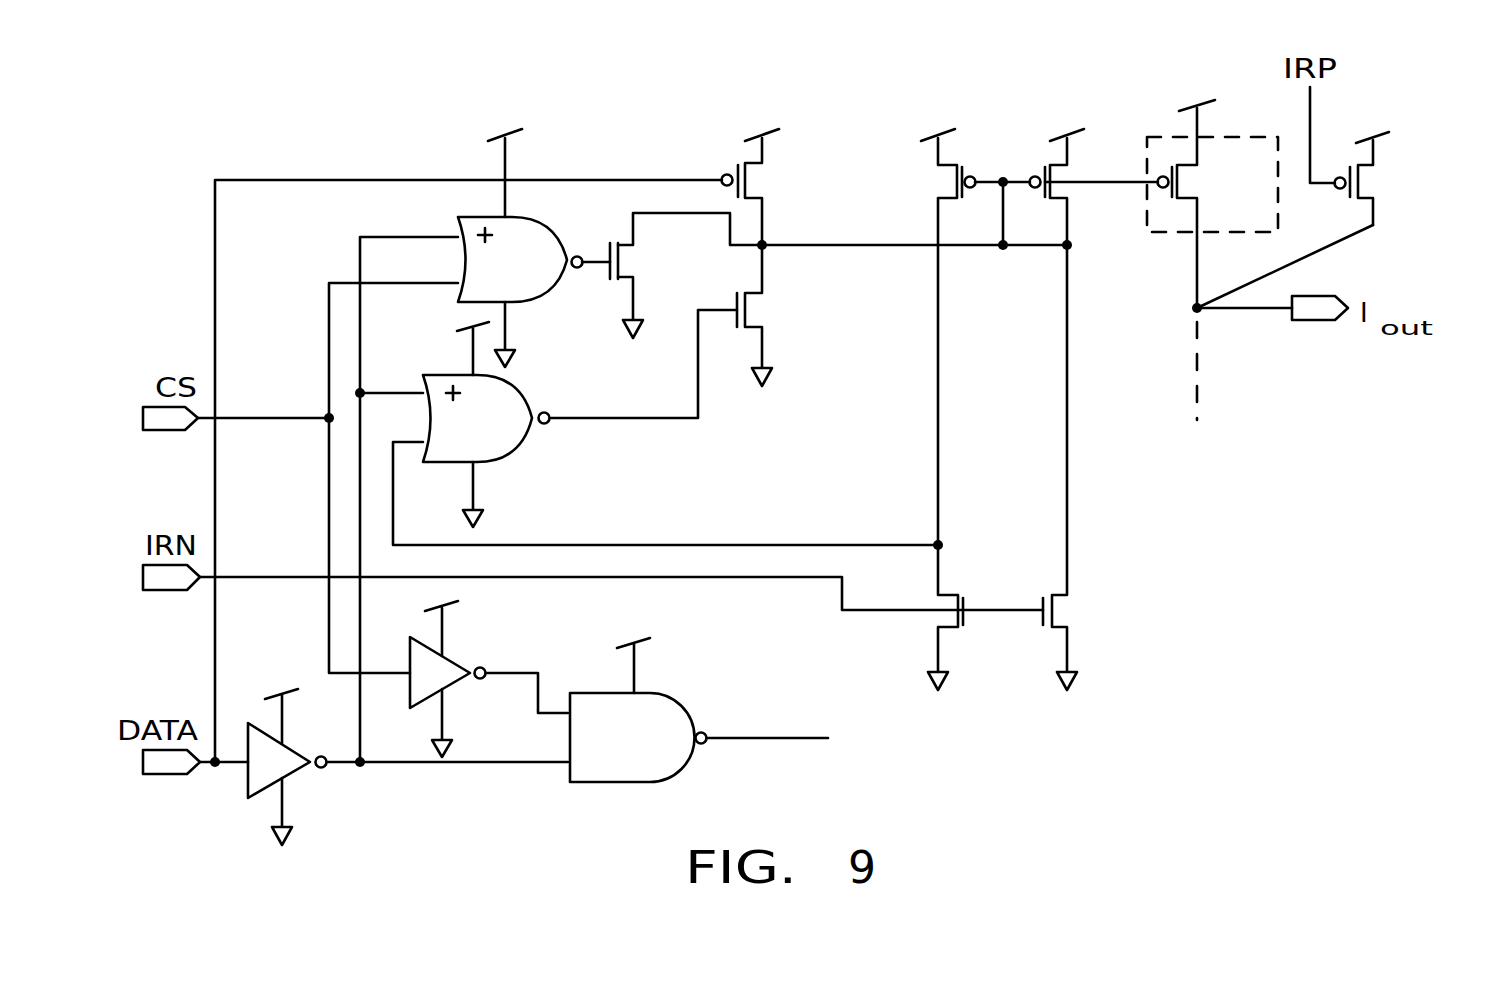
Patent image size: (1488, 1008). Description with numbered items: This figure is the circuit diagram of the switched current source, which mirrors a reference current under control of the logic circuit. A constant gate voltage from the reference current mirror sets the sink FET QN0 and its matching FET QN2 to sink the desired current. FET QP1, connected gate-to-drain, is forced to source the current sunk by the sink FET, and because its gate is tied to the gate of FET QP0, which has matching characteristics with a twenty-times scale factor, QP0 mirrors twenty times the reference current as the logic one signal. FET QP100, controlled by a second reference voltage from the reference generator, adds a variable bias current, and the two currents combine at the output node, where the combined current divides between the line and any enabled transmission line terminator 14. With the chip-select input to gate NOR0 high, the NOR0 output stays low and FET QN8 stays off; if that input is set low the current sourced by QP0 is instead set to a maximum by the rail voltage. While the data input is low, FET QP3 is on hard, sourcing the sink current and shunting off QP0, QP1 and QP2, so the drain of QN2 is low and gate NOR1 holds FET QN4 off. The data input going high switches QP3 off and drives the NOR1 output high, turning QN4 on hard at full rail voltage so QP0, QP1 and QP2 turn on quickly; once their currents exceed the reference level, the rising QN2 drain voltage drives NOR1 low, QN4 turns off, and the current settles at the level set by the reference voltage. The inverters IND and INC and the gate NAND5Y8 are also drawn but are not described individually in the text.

The transmission line terminator 14 is at (1003, 555).
The gate NOR0 is at (520, 225).
The gate NOR1 is at (486, 424).
The FET QN8 is at (686, 275).
The FET QP3 is at (776, 164).
The FET QN4 is at (783, 315).
The FET QP2 is at (921, 164).
The FET QP1 is at (1083, 164).
The FET QP0 is at (1212, 180).
The FET QP100 is at (1407, 154).
The FET QN2 is at (915, 617).
The NMOS transistor QN0 is at (1090, 467).
The inverter IND is at (296, 767).
The inverter INC is at (458, 679).
The NAND gate NAND5Y8 is at (638, 710).